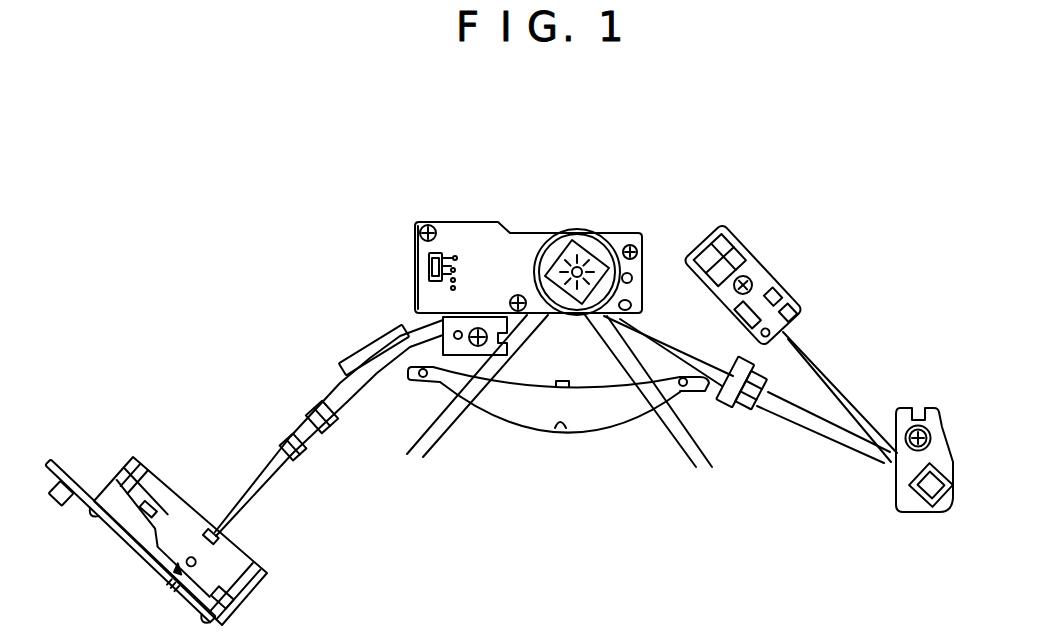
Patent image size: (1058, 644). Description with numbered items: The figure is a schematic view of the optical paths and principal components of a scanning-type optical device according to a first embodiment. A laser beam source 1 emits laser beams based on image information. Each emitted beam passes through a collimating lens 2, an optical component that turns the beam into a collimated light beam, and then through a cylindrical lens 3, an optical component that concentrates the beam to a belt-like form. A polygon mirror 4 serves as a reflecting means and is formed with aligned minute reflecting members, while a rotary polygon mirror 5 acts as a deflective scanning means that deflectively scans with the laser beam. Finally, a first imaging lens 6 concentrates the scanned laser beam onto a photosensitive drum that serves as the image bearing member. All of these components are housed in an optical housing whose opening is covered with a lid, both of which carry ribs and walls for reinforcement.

The laser beam source 1 is at (197, 553).
The collimating lens 2 is at (283, 437).
The cylindrical lens 3 is at (328, 427).
The polygon mirror 4 is at (368, 347).
The rotary polygon mirror 5 is at (593, 262).
The first imaging lens 6 is at (597, 430).